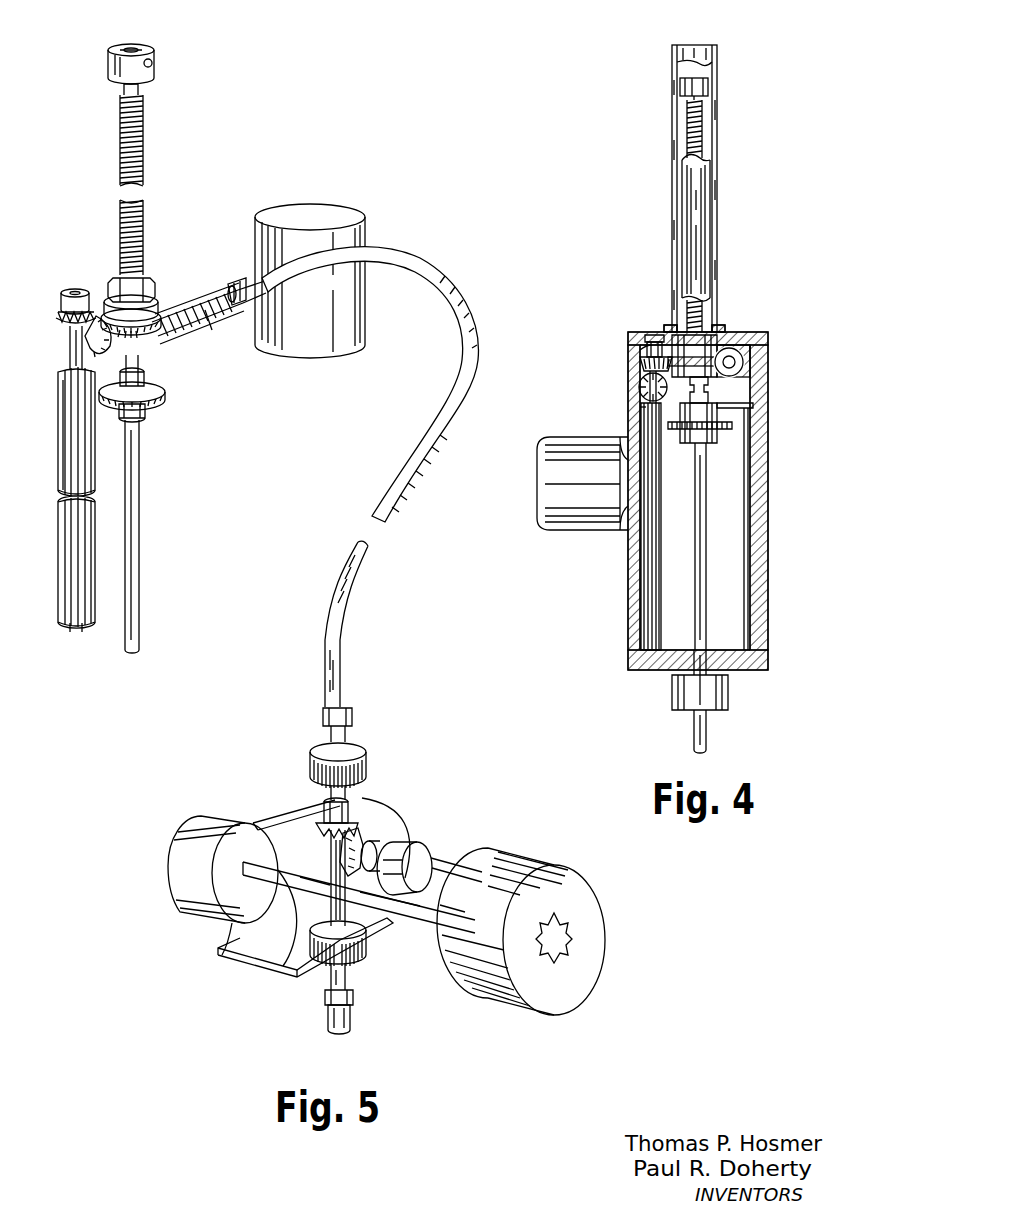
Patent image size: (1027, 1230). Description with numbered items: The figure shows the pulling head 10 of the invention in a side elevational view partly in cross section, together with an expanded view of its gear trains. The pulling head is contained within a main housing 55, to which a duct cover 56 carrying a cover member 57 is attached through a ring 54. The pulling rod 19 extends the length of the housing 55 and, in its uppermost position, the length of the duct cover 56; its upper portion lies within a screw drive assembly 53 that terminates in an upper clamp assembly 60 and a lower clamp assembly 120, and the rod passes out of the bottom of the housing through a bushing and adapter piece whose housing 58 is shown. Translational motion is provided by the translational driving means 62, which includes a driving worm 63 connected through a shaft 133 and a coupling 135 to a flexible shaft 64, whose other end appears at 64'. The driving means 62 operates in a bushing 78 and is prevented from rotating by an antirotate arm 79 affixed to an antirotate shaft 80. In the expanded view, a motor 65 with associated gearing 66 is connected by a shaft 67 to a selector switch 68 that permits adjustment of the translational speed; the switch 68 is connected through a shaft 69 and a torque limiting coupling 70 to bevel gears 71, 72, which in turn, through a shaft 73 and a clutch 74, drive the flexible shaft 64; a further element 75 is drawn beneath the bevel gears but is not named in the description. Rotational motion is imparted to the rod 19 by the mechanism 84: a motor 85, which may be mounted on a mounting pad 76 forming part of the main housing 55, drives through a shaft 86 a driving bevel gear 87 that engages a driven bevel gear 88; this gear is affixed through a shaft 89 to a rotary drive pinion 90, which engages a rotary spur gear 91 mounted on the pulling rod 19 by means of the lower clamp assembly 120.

In FIG. 4, the gear box housing 10 is at (783, 370).
In FIG. 5, the pulling rod 19 is at (140, 490).
In FIG. 4, the pulling rod 19 is at (720, 530).
In FIG. 5, the screw drive assembly 53 is at (145, 125).
In FIG. 4, the screw drive assembly 53 is at (704, 142).
In FIG. 4, the ring 54 is at (668, 325).
In FIG. 4, the main housing 55 is at (760, 474).
In FIG. 4, the duct cover 56 is at (697, 218).
In FIG. 4, the cover member 57 is at (712, 48).
In FIG. 4, the bushing and adapter housing 58 is at (730, 692).
In FIG. 5, the upper clamp assembly 60 is at (152, 54).
In FIG. 4, the upper clamp assembly 60 is at (708, 86).
In FIG. 5, the translational driving means 62 is at (150, 288).
In FIG. 4, the translational driving means 62 is at (718, 348).
In FIG. 5, the driving worm 63 is at (155, 328).
In FIG. 4, the driving worm 63 is at (742, 358).
In FIG. 5, the flexible shaft 64 is at (370, 477).
In FIG. 5, the cable end fitting 64' is at (367, 1002).
In FIG. 5, the motor 65 is at (290, 818).
In FIG. 5, the gearing 66 is at (182, 857).
In FIG. 5, the shaft 67 is at (418, 912).
In FIG. 5, the selector switch 68 is at (510, 860).
In FIG. 5, the shaft 69 is at (438, 860).
In FIG. 5, the torque limiting coupling 70 is at (410, 842).
In FIG. 5, the bevel gear 71 is at (362, 842).
In FIG. 5, the bevel gear 72 is at (352, 822).
In FIG. 5, the shaft 73 is at (345, 794).
In FIG. 5, the clutch 74 is at (355, 746).
In FIG. 5, the lower drum 75 is at (360, 958).
In FIG. 4, the mounting pad 76 is at (590, 512).
In FIG. 4, the bushing 78 is at (722, 340).
In FIG. 4, the antirotate arm 79 is at (754, 402).
In FIG. 4, the antirotate shaft 80 is at (750, 601).
In FIG. 4, the rotational drive mechanism 84 is at (628, 411).
In FIG. 5, the motor 85 is at (328, 212).
In FIG. 5, the shaft 86 is at (200, 292).
In FIG. 5, the driving bevel gear 87 is at (85, 345).
In FIG. 4, the driving bevel gear 87 is at (640, 366).
In FIG. 5, the driven bevel gear 88 is at (58, 305).
In FIG. 4, the driven bevel gear 88 is at (648, 358).
In FIG. 5, the shaft 89 is at (70, 358).
In FIG. 4, the shaft 89 is at (640, 394).
In FIG. 5, the rotary drive pinion 90 is at (72, 455).
In FIG. 4, the rotary drive pinion 90 is at (650, 596).
In FIG. 5, the rotary spur gear 91 is at (160, 400).
In FIG. 4, the rotary spur gear 91 is at (700, 453).
In FIG. 5, the lower clamp assembly 120 is at (146, 418).
In FIG. 4, the lower clamp assembly 120 is at (718, 438).
In FIG. 5, the shaft extension 133 is at (205, 312).
In FIG. 5, the threaded collar coupling 135 is at (240, 302).